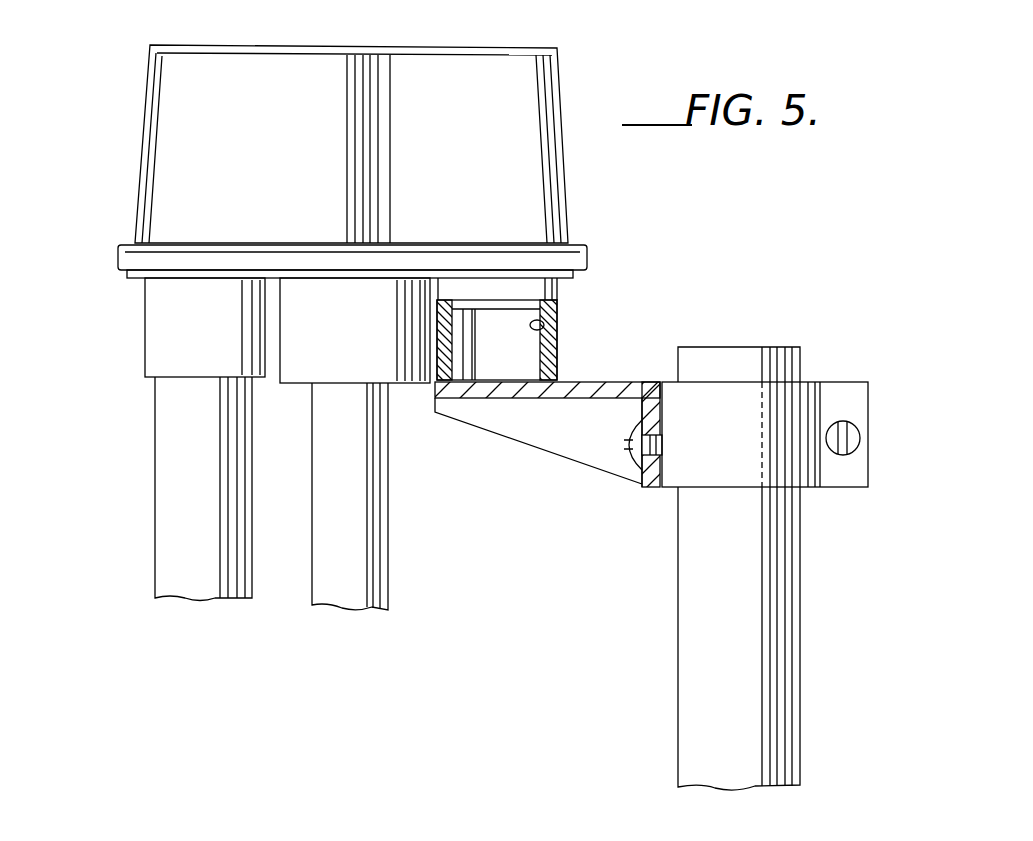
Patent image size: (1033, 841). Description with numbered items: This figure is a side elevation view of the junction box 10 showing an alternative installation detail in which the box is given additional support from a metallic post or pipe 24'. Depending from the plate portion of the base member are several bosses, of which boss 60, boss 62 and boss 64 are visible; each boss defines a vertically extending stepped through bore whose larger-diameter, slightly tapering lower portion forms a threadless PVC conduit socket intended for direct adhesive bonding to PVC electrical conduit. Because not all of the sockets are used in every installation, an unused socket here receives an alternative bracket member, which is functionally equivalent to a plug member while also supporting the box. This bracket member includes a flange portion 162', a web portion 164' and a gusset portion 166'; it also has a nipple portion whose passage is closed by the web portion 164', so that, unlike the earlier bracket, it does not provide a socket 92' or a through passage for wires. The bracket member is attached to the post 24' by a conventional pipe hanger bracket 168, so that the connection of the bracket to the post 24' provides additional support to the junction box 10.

The junction box 10 is at (109, 42).
The boss 60 is at (152, 339).
The boss 62 is at (323, 364).
The boss 64 is at (553, 352).
The socket 92' is at (572, 309).
The web portion 164' is at (570, 354).
The gusset portion 166' is at (538, 448).
The flange portion 162' is at (616, 458).
The pipe hanger bracket 168 is at (703, 478).
The post 24' is at (775, 568).